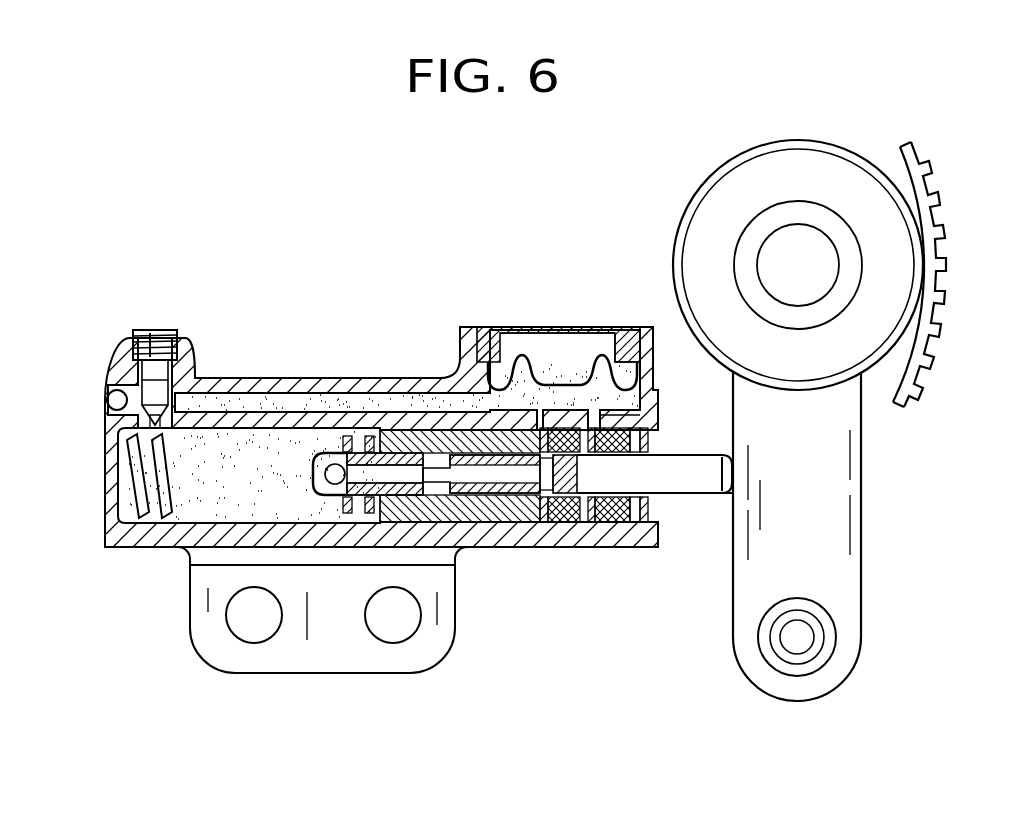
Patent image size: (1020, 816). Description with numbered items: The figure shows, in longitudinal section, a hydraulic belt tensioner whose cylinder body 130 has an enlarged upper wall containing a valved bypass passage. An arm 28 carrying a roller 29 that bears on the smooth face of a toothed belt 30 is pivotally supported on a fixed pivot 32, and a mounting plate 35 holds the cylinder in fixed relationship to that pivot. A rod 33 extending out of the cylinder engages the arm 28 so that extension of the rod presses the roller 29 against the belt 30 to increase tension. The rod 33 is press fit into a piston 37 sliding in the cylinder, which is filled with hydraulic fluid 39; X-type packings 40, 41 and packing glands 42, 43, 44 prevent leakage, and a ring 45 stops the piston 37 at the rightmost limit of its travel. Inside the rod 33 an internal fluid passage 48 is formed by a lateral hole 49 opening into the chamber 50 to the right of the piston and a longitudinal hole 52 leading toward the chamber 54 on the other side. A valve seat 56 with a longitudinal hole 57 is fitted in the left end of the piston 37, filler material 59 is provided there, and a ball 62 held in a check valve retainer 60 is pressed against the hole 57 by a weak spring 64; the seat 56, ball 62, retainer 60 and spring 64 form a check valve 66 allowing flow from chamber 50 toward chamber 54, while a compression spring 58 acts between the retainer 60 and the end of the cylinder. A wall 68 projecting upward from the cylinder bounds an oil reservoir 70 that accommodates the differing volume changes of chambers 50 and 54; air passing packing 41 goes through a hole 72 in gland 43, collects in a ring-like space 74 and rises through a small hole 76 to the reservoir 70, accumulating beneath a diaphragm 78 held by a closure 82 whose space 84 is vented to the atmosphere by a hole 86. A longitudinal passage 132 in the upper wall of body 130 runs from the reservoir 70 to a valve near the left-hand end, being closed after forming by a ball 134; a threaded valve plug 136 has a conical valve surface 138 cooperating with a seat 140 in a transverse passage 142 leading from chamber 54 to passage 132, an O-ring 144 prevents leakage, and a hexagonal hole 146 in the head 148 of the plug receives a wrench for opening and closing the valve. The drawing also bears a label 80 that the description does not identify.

The arm 28 is at (850, 583).
The roller 29 is at (800, 140).
The toothed belt 30 is at (930, 198).
The fixed pivot 32 is at (807, 637).
The rod 33 is at (703, 495).
The mounting plate 35 is at (325, 673).
The piston 37 is at (482, 540).
The hydraulic fluid 39 is at (292, 428).
The X-type packing 40 is at (592, 522).
The X-type packing 41 is at (633, 530).
The packing gland 42 is at (575, 520).
The packing gland 43 is at (613, 523).
The packing gland 44 is at (655, 527).
The ring 45 is at (553, 520).
The internal fluid passage 48 is at (575, 484).
The lateral hole 49 is at (515, 468).
The chamber 50 is at (527, 520).
The longitudinal hole 52 is at (460, 515).
The chamber 54 is at (247, 486).
The valve seat 56 is at (355, 495).
The longitudinal hole 57 is at (392, 492).
The compression spring 58 is at (140, 527).
The filler material 59 is at (422, 470).
The check valve retainer 60 is at (322, 515).
The ball 62 is at (323, 473).
The weak spring 64 is at (322, 488).
The check valve 66 is at (282, 548).
The wall 68 is at (647, 352).
The oil reservoir 70 is at (641, 398).
The hole 72 is at (600, 457).
The ring-like space 74 is at (650, 470).
The small hole 76 is at (636, 422).
The diaphragm 78 is at (582, 375).
The port 80 is at (540, 425).
The closure 82 is at (488, 334).
The space 84 is at (555, 345).
The hole 86 is at (620, 334).
The body 130 is at (351, 366).
The longitudinal passage 132 is at (255, 400).
The ball 134 is at (107, 398).
The threaded valve plug 136 is at (120, 370).
The conical valve surface 138 is at (118, 410).
The seat 140 is at (170, 390).
The transverse passage 142 is at (163, 440).
The O-ring 144 is at (175, 368).
The hexagonal hole 146 is at (150, 330).
The head 148 is at (165, 330).